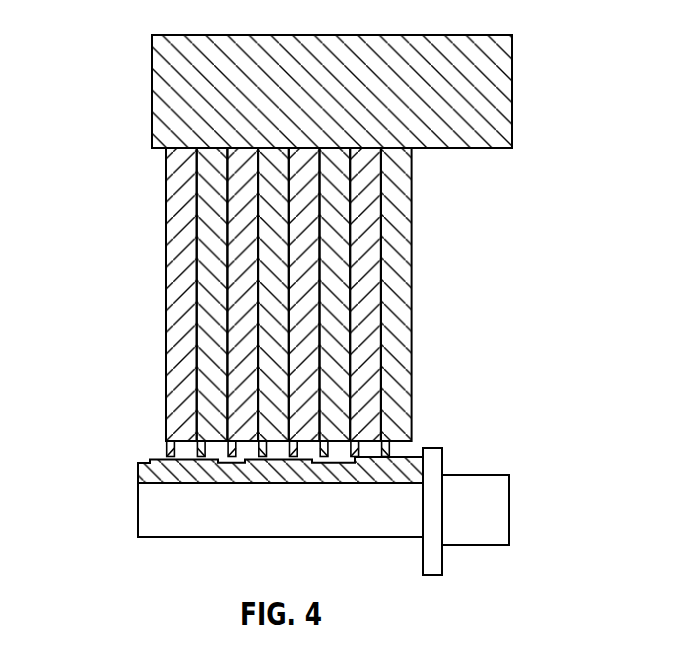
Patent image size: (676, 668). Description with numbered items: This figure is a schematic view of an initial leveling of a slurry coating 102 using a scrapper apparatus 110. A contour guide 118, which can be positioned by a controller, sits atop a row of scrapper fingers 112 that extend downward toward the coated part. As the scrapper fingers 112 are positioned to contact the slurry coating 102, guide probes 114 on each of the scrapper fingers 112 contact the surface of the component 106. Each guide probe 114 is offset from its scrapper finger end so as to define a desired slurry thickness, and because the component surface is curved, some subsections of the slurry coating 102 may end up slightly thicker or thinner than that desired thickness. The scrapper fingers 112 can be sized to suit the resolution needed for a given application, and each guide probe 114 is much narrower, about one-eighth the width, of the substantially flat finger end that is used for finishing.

The contour guide 118 is at (133, 68).
The scrapper apparatus 110 is at (167, 245).
The scrapper fingers 112 is at (412, 290).
The guide probes 114 is at (165, 453).
The slurry coating 102 is at (138, 475).
The component 106 is at (138, 517).